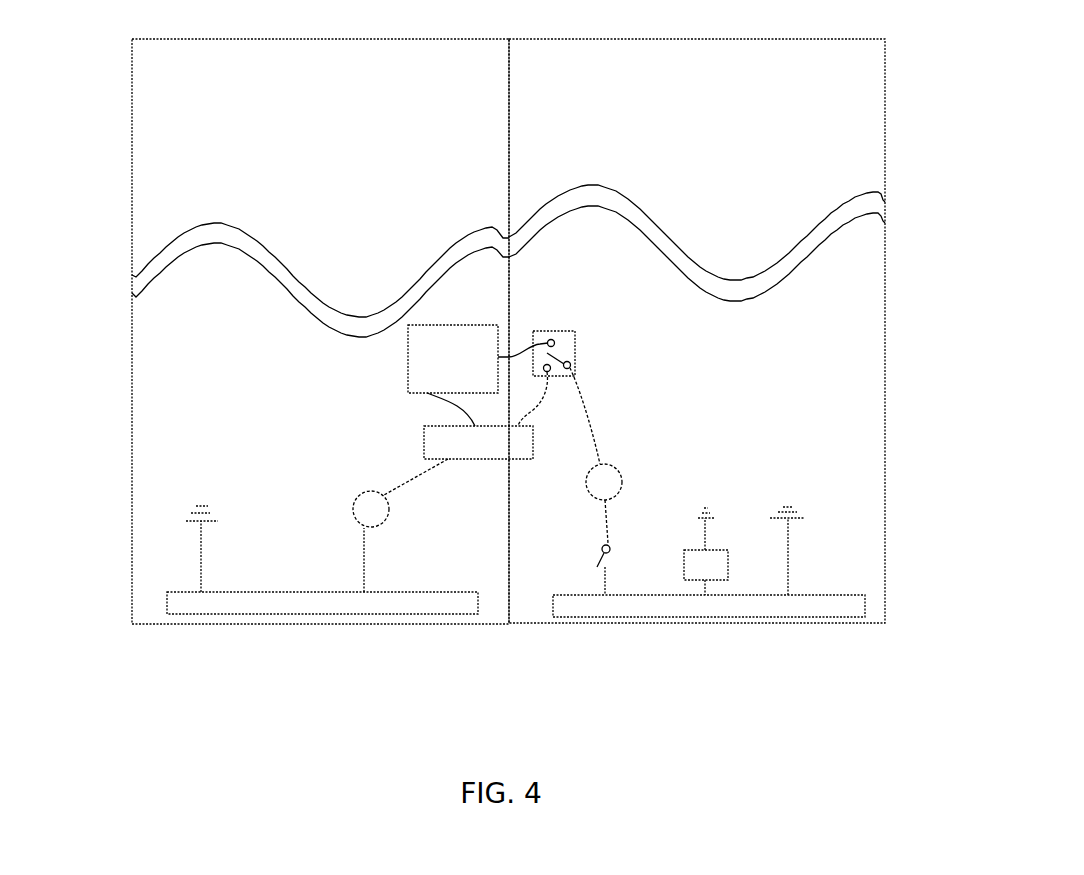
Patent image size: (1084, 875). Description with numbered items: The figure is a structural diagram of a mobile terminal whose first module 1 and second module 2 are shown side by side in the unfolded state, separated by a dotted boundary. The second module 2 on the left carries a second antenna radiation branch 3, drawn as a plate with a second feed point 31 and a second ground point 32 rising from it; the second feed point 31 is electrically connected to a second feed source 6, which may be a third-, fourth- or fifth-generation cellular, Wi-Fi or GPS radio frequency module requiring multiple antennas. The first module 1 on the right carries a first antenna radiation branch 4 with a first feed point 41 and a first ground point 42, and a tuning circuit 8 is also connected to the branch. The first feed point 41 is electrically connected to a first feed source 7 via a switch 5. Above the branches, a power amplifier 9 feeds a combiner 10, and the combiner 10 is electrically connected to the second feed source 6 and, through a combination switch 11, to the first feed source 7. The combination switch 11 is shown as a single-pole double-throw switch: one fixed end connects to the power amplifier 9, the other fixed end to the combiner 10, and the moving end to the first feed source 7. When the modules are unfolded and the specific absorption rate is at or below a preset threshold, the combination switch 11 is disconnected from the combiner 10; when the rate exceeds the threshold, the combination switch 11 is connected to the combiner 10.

The first module 1 is at (833, 90).
The second module 2 is at (178, 92).
The second antenna radiation branch 3 is at (292, 604).
The first antenna radiation branch 4 is at (745, 607).
The switch 5 is at (601, 551).
The second feed source 6 is at (353, 504).
The first feed source 7 is at (617, 468).
The tuning circuit 8 is at (716, 547).
The power amplifier 9 is at (408, 352).
The combiner 10 is at (424, 445).
The combination switch 11 is at (575, 350).
The second feed point 31 is at (360, 590).
The second ground point 32 is at (196, 590).
The first feed point 41 is at (603, 593).
The first ground point 42 is at (790, 593).